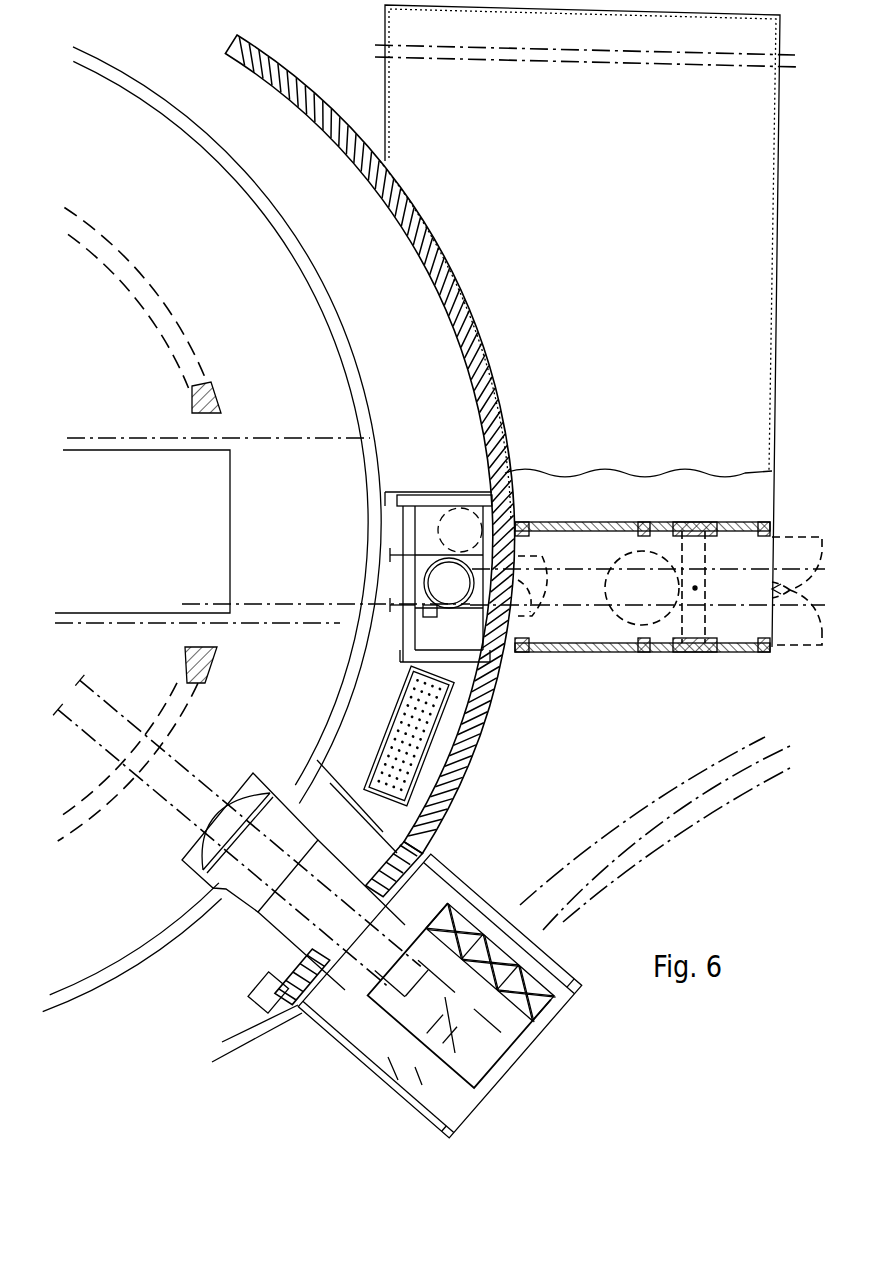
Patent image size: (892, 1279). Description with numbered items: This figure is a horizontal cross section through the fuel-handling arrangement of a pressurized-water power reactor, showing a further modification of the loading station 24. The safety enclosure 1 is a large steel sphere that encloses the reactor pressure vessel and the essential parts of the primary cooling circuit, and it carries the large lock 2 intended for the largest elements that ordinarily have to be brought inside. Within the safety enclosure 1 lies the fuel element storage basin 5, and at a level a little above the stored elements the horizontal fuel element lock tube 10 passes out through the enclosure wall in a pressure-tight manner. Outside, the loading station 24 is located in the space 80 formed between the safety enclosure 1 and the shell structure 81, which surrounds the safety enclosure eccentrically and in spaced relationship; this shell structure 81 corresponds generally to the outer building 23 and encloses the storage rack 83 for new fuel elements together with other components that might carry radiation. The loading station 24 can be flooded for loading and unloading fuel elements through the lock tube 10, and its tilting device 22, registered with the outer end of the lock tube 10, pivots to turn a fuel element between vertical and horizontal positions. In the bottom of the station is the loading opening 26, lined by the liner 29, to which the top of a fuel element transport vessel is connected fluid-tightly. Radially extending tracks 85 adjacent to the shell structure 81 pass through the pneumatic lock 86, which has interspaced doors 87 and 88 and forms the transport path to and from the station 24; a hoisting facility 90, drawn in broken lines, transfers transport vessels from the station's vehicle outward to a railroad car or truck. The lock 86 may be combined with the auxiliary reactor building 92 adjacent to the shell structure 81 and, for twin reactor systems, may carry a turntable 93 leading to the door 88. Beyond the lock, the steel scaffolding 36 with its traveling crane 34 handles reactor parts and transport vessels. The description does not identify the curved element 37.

The safety enclosure 1 is at (347, 692).
The large lock 2 is at (252, 895).
The fuel element storage basin 5 is at (187, 569).
The fuel element lock tube 10 is at (270, 603).
The tilting device 22 is at (425, 612).
The outer building 23 is at (445, 813).
The loading station 24 is at (455, 670).
The loading opening 26 is at (433, 603).
The liner 29 is at (440, 578).
The traveling crane 34 is at (557, 1003).
The steel scaffolding 36 is at (500, 1070).
The guide rail 37 is at (613, 878).
The space 80 is at (450, 449).
The shell structure 81 is at (483, 742).
The storage rack 83 is at (420, 743).
The radially extending tracks 85 is at (783, 610).
The pneumatic lock 86 is at (760, 653).
The door 87 is at (533, 602).
The door 88 is at (772, 553).
The hoisting facility 90 is at (696, 590).
The auxiliary reactor building 92 is at (626, 242).
The turntable 93 is at (625, 622).